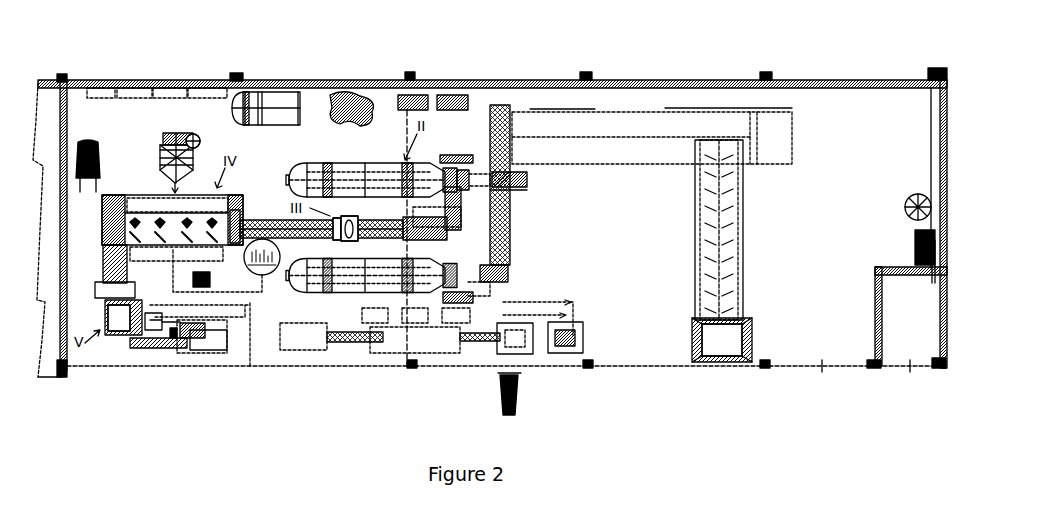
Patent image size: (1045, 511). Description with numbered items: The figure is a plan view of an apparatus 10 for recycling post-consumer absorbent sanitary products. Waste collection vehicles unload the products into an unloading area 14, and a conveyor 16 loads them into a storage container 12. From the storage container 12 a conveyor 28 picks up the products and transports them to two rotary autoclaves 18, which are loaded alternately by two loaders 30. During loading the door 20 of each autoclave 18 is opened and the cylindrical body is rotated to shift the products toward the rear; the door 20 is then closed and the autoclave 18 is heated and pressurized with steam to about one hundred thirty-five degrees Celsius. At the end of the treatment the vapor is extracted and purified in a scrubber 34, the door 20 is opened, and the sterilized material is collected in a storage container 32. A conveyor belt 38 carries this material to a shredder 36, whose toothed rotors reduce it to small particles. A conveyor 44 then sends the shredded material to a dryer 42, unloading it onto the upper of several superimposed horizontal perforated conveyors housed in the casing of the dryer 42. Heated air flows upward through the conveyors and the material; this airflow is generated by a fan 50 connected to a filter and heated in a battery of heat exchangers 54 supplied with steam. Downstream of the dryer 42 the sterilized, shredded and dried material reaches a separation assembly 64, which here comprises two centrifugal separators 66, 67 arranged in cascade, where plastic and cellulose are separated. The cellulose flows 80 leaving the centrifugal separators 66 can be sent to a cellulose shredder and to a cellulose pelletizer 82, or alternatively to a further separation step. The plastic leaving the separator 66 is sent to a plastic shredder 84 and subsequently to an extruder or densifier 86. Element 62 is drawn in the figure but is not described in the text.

The apparatus 10 is at (483, 80).
The storage container 12 is at (613, 103).
The unloading area 14 is at (755, 335).
The conveyor 16 is at (745, 245).
The rotary autoclave 18 is at (380, 162).
The door 20 is at (450, 157).
The conveyor 28 is at (510, 222).
The loader 30 is at (528, 178).
The storage container 32 is at (462, 200).
The scrubber 34 is at (280, 257).
The shredder 36 is at (350, 243).
The conveyor belt 38 is at (333, 215).
The dryer 42 is at (147, 195).
The conveyor 44 is at (270, 217).
The fan 50 is at (185, 133).
The battery of heat exchangers 54 is at (195, 165).
The column 62 is at (107, 263).
The separation assembly 64 is at (127, 356).
The centrifugal separator 66 is at (93, 320).
The centrifugal separator 67 is at (197, 360).
The cellulose flows 80 is at (250, 366).
The cellulose pelletizer 82 is at (585, 338).
The plastic shredder 84 is at (305, 350).
The extruder or densifier 86 is at (445, 355).